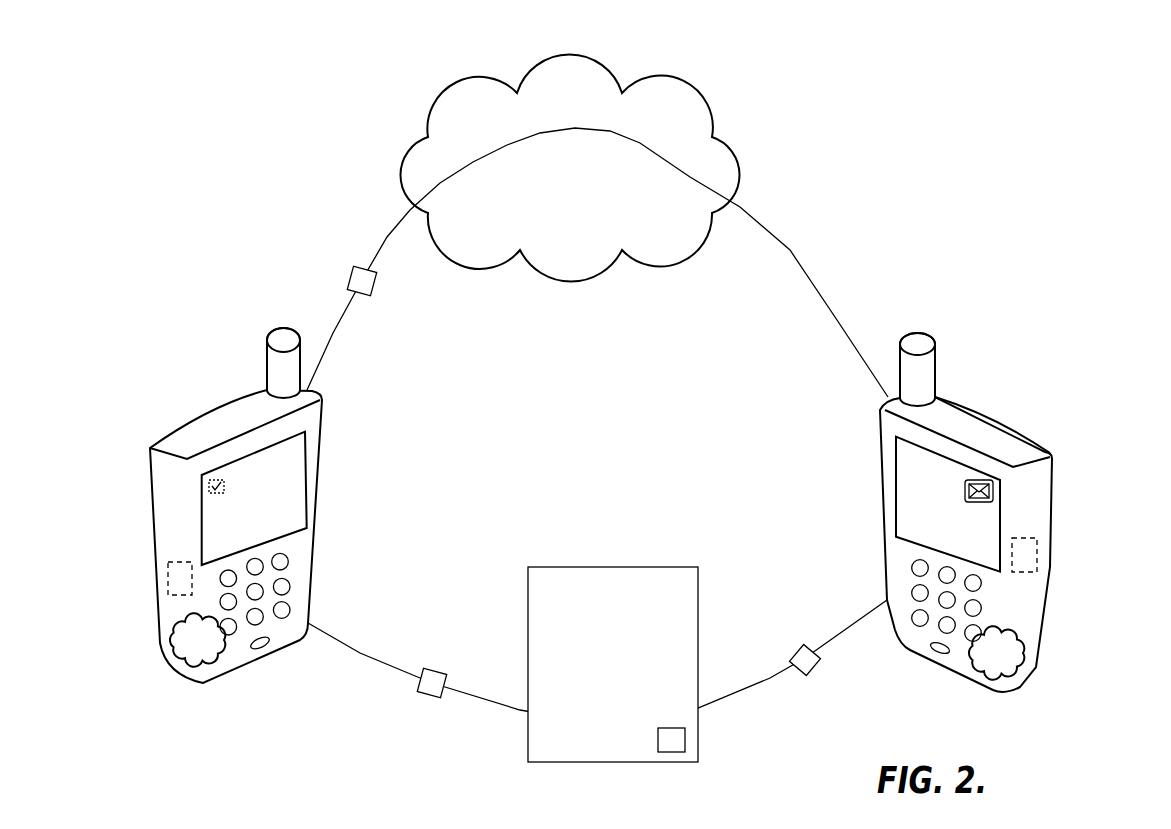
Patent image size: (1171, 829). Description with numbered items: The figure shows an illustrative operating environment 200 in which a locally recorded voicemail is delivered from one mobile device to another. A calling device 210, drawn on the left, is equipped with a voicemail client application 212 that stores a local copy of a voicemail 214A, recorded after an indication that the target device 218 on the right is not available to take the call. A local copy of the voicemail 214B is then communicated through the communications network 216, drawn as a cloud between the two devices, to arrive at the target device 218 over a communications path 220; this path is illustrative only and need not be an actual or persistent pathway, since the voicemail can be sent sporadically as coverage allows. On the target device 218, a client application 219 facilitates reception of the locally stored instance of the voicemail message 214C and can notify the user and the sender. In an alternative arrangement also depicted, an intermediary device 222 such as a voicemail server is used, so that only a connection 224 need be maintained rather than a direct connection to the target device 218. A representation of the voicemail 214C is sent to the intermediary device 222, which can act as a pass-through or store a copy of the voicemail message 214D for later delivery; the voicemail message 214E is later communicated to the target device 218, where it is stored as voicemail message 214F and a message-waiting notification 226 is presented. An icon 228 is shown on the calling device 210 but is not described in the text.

The operating environment 200 is at (902, 125).
The calling device 210 is at (148, 498).
The voicemail client application 212 is at (190, 660).
The voicemail 214A is at (167, 588).
The local copy of voicemail 214B is at (365, 298).
The voicemail message 214C is at (430, 697).
The voicemail message 214D is at (670, 752).
The voicemail message 214E is at (792, 650).
The voicemail message 214F is at (1037, 552).
The communications network 216 is at (378, 167).
The target device 218 is at (878, 513).
The client application 219 is at (985, 672).
The communications path 220 is at (837, 318).
The intermediary device 222 is at (528, 618).
The connection 224 is at (365, 655).
The message-waiting notification 226 is at (980, 480).
The check mark icon 228 is at (215, 480).